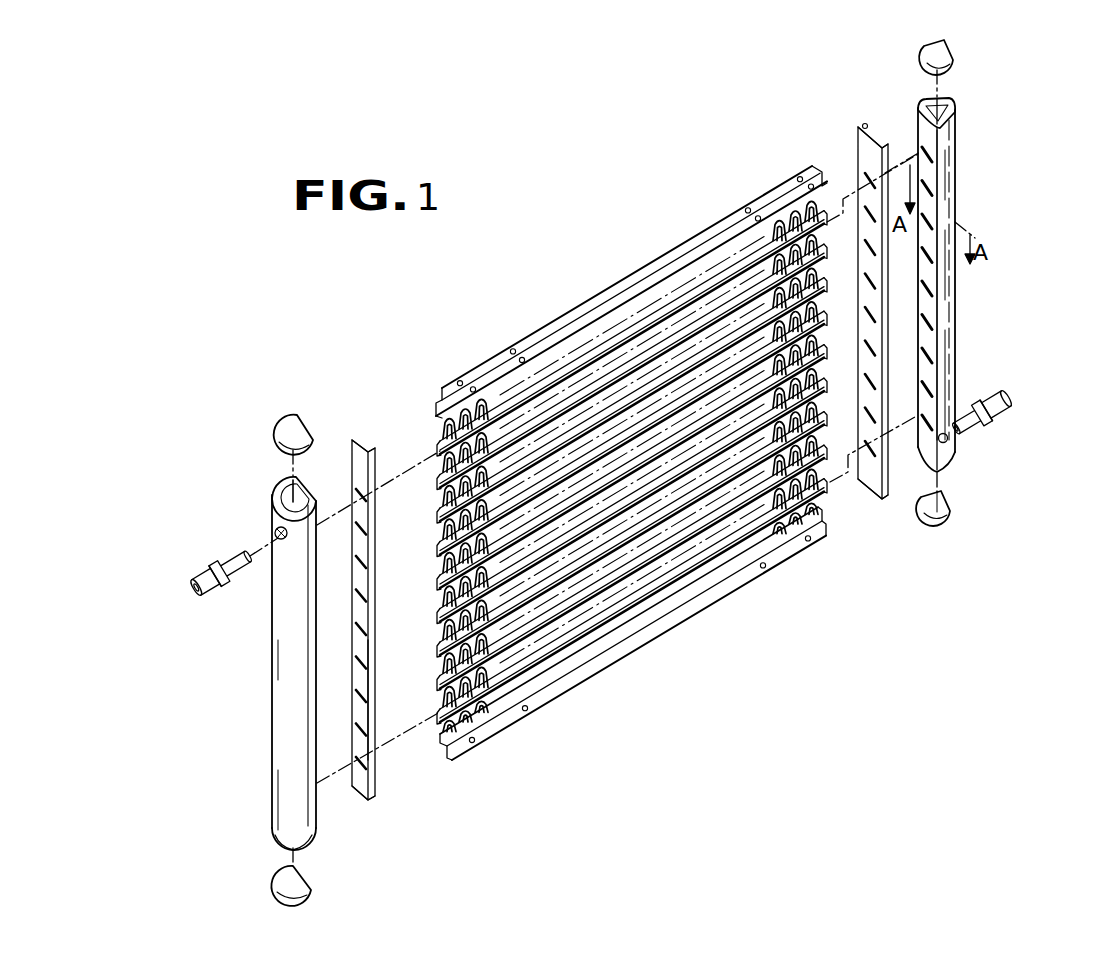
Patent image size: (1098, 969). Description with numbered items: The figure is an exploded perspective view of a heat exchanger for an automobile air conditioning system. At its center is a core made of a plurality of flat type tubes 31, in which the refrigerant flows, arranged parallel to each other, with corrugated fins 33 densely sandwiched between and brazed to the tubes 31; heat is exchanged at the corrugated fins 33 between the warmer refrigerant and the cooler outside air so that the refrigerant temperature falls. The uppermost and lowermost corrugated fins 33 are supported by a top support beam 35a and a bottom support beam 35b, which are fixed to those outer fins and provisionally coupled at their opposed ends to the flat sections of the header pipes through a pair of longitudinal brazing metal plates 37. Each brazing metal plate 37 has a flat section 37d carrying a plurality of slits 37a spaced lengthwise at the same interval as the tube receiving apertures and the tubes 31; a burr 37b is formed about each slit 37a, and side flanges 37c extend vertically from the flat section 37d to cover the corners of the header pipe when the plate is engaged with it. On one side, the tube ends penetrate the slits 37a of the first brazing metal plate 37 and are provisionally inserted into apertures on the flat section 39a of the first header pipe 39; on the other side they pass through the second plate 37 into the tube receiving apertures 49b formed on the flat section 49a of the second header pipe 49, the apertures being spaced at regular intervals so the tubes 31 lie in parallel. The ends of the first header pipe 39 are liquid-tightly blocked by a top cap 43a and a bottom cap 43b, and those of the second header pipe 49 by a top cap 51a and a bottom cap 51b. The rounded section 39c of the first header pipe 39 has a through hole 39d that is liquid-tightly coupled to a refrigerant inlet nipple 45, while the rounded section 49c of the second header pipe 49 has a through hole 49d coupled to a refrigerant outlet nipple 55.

The flat type tube 31 is at (608, 587).
The corrugated fin 33 is at (480, 417).
The top support beam 35a is at (668, 280).
The bottom support beam 35b is at (735, 583).
The brazing metal plate 37 is at (388, 766).
The slit 37a is at (886, 485).
The burr 37b is at (372, 695).
The side flange 37c is at (352, 758).
The flat section 37d is at (370, 452).
The first header pipe 39 is at (266, 704).
The flat section 39a is at (303, 487).
The rounded section 39c is at (285, 812).
The through hole 39d is at (276, 530).
The top cap 43a is at (287, 425).
The bottom cap 43b is at (277, 887).
The refrigerant inlet nipple 45 is at (196, 595).
The second header pipe 49 is at (967, 190).
The flat section 49a is at (935, 272).
The tube receiving aperture 49b is at (930, 313).
The rounded section 49c is at (955, 113).
The through hole 49d is at (950, 443).
The top cap 51a is at (955, 57).
The bottom cap 51b is at (933, 519).
The refrigerant outlet nipple 55 is at (1002, 390).